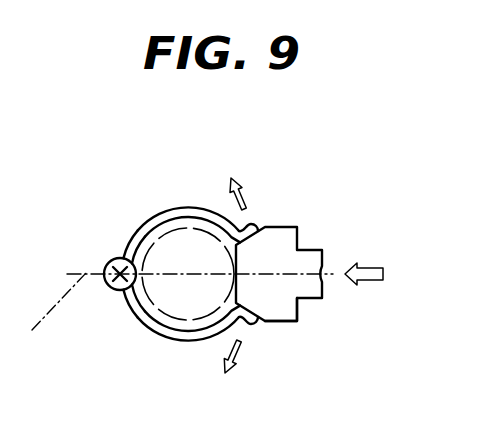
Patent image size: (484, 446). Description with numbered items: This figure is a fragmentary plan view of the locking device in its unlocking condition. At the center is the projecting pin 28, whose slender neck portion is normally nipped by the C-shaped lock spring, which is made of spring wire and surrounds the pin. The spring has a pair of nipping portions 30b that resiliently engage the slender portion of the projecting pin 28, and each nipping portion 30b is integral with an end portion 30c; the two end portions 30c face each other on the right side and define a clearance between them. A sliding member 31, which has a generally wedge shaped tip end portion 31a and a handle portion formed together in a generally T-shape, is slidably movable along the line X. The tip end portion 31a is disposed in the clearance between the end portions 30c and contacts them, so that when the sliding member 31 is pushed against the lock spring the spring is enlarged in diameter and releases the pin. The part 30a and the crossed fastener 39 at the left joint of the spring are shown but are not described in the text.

The projecting pin 28 is at (188, 231).
The clamp base portion 30a is at (131, 252).
The nipping portions 30b is at (157, 215).
The end portions 30c is at (256, 228).
The sliding member 31 is at (320, 235).
The tip end portion 31a is at (284, 312).
The bolt 39 is at (118, 292).
The line X is at (48, 315).